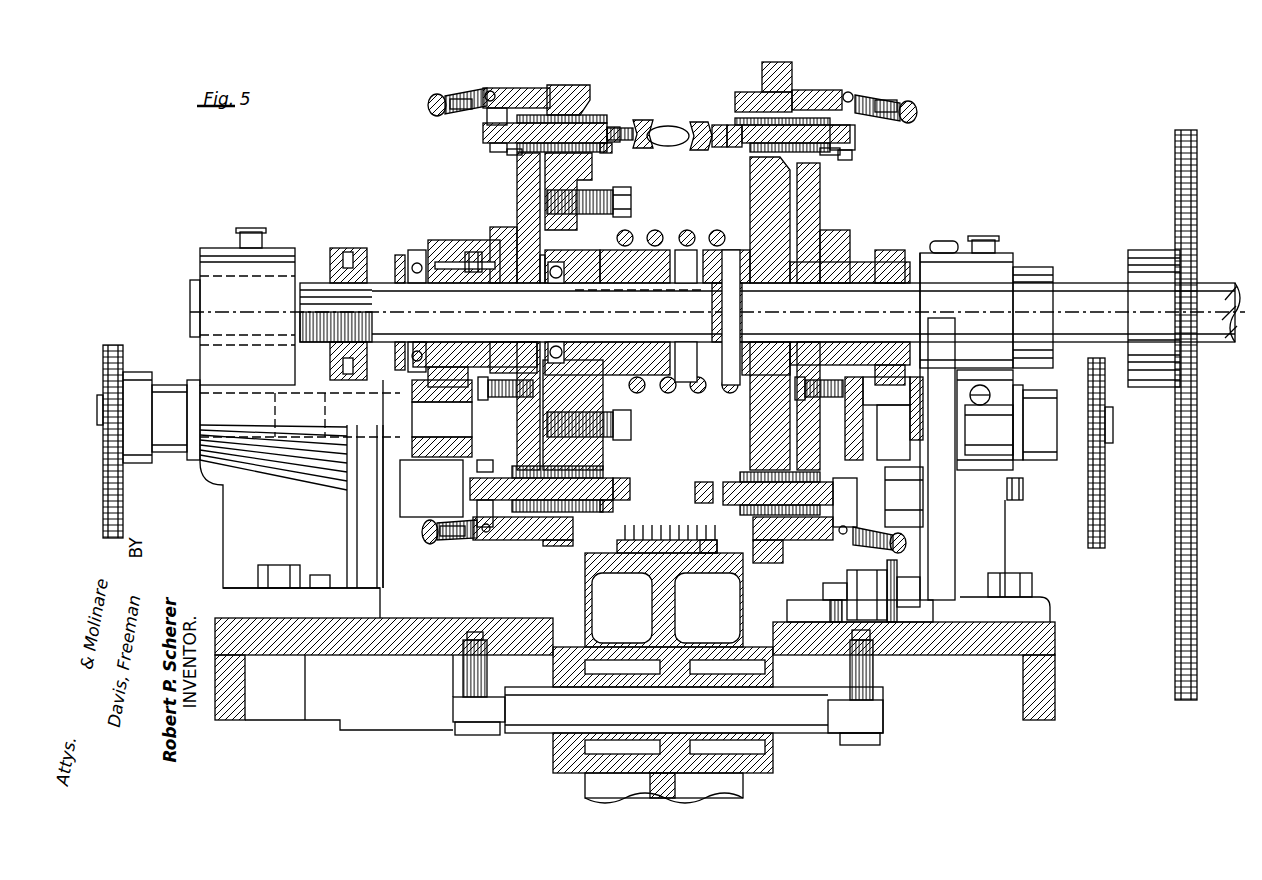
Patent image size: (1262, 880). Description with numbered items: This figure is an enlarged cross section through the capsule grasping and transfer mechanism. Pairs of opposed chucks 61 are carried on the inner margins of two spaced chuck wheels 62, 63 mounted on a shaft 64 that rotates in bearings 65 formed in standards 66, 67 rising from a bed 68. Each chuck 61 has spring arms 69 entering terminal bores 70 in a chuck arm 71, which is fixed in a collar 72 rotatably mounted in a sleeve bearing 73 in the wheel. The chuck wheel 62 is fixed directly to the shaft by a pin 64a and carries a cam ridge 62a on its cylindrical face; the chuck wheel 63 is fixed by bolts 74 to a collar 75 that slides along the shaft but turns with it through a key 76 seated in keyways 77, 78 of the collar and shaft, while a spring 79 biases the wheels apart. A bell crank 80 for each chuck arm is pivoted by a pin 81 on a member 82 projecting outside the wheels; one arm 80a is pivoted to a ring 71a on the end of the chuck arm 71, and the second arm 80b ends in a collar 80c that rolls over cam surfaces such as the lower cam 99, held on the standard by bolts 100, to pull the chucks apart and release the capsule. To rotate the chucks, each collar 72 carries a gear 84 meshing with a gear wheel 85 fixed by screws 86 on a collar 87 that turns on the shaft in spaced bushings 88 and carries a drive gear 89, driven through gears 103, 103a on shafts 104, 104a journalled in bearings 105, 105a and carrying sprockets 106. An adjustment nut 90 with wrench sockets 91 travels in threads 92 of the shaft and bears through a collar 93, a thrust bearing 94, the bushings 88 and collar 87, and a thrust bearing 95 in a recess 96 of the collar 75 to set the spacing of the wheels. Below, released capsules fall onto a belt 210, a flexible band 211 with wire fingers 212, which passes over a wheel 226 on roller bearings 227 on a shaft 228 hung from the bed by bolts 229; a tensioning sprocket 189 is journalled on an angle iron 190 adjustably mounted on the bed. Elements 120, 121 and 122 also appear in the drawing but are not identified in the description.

The chucks 61 is at (660, 124).
The chuck wheel 62 is at (750, 200).
The cam ridge 62a is at (785, 62).
The chuck wheel 63 is at (590, 170).
The shaft 64 is at (803, 314).
The pin 64a is at (712, 312).
The bearings 65 is at (215, 278).
The standard 66 is at (1013, 522).
The standard 67 is at (216, 524).
The bed 68 is at (1055, 648).
The spring arms 69 is at (640, 120).
The terminal bores 70 is at (612, 127).
The chuck arms 71 is at (590, 123).
The ring 71a is at (490, 148).
The collars 72 is at (610, 143).
The sleeve bearings 73 is at (575, 85).
The bolts 74 is at (625, 200).
The collar 75 is at (640, 232).
The key 76 is at (628, 285).
The keyway 77 is at (574, 285).
The keyway 78 is at (668, 292).
The spring 79 is at (666, 232).
The bell crank 80 is at (454, 125).
The arm 80a is at (490, 125).
The second arm 80b is at (460, 99).
The collar 80c is at (437, 94).
The pins 81 is at (494, 91).
The members 82 is at (525, 88).
The gear 84 is at (510, 153).
The gear wheels 85 is at (820, 195).
The screws 86 is at (515, 398).
The collars 87 is at (490, 245).
The bushings 88 is at (445, 255).
The drive gears 89 is at (468, 250).
The adjustment nut 90 is at (332, 248).
The wrench sockets 91 is at (348, 252).
The threads 92 is at (305, 283).
The collar 93 is at (398, 255).
The thrust bearing 94 is at (414, 250).
The thrust bearing 95 is at (552, 282).
The recess 96 is at (540, 270).
The lower cam 99 is at (945, 480).
The bolts 100 is at (1023, 490).
The gear 103 is at (885, 470).
The gear 103a is at (455, 470).
The shaft 104 is at (884, 418).
The shaft 104a is at (435, 418).
The bearing 105 is at (1013, 470).
The bearing 105a is at (290, 455).
The sprockets 106 is at (123, 350).
The chain 120 is at (1195, 518).
The sprocket 121 is at (1204, 246).
The sprocket 122 is at (123, 508).
The tensioning sprocket 189 is at (892, 625).
The angle iron 190 is at (822, 615).
The belt 210 is at (617, 546).
The flexible band 211 is at (712, 550).
The wire fingers 212 is at (680, 538).
The wheel 226 is at (735, 578).
The roller bearings 227 is at (612, 660).
The shaft 228 is at (672, 714).
The bolts 229 is at (487, 668).